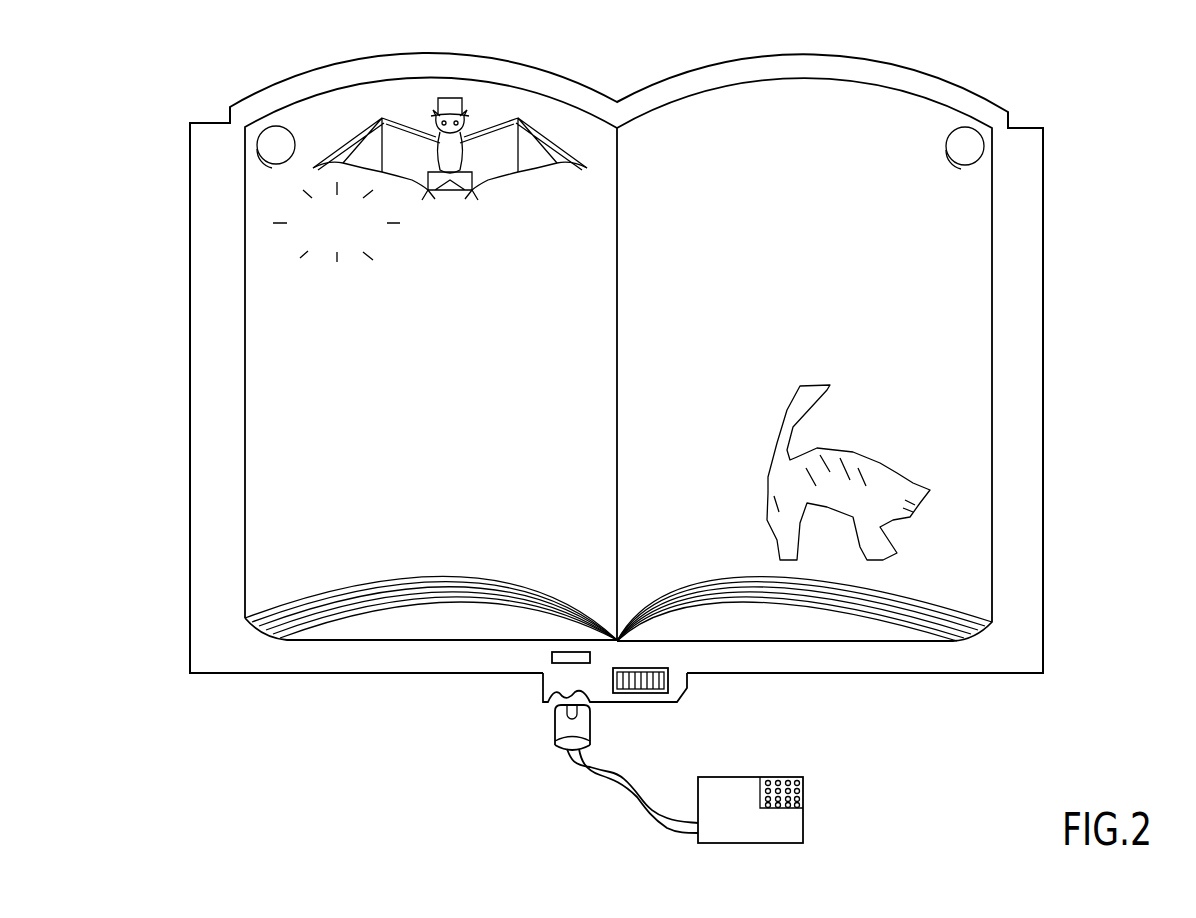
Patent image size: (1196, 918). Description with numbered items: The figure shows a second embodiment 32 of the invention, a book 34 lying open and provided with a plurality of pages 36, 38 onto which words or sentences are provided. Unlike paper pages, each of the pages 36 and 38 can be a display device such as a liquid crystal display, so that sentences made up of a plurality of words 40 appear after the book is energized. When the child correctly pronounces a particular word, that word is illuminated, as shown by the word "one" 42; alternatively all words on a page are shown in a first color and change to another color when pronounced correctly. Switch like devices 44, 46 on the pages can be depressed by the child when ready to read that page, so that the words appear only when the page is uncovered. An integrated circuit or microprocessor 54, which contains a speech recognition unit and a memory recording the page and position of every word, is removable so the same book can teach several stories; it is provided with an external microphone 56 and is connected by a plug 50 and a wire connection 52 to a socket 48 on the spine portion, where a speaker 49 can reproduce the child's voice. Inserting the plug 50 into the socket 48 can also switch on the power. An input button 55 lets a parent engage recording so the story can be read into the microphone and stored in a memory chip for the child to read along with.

The embodiment 32 is at (1064, 104).
The book 34 is at (1044, 318).
The page 36 is at (553, 555).
The page 38 is at (963, 572).
The words 40 is at (510, 307).
The word "one" 42 is at (298, 243).
The switch like device 44 is at (256, 152).
The switch like device 46 is at (963, 168).
The socket 48 is at (545, 690).
The speaker 49 is at (690, 680).
The plug 50 is at (591, 718).
The wire connection 52 is at (578, 768).
The integrated circuit or microprocessor 54 is at (798, 828).
The input button 55 is at (551, 658).
The external microphone 56 is at (803, 778).